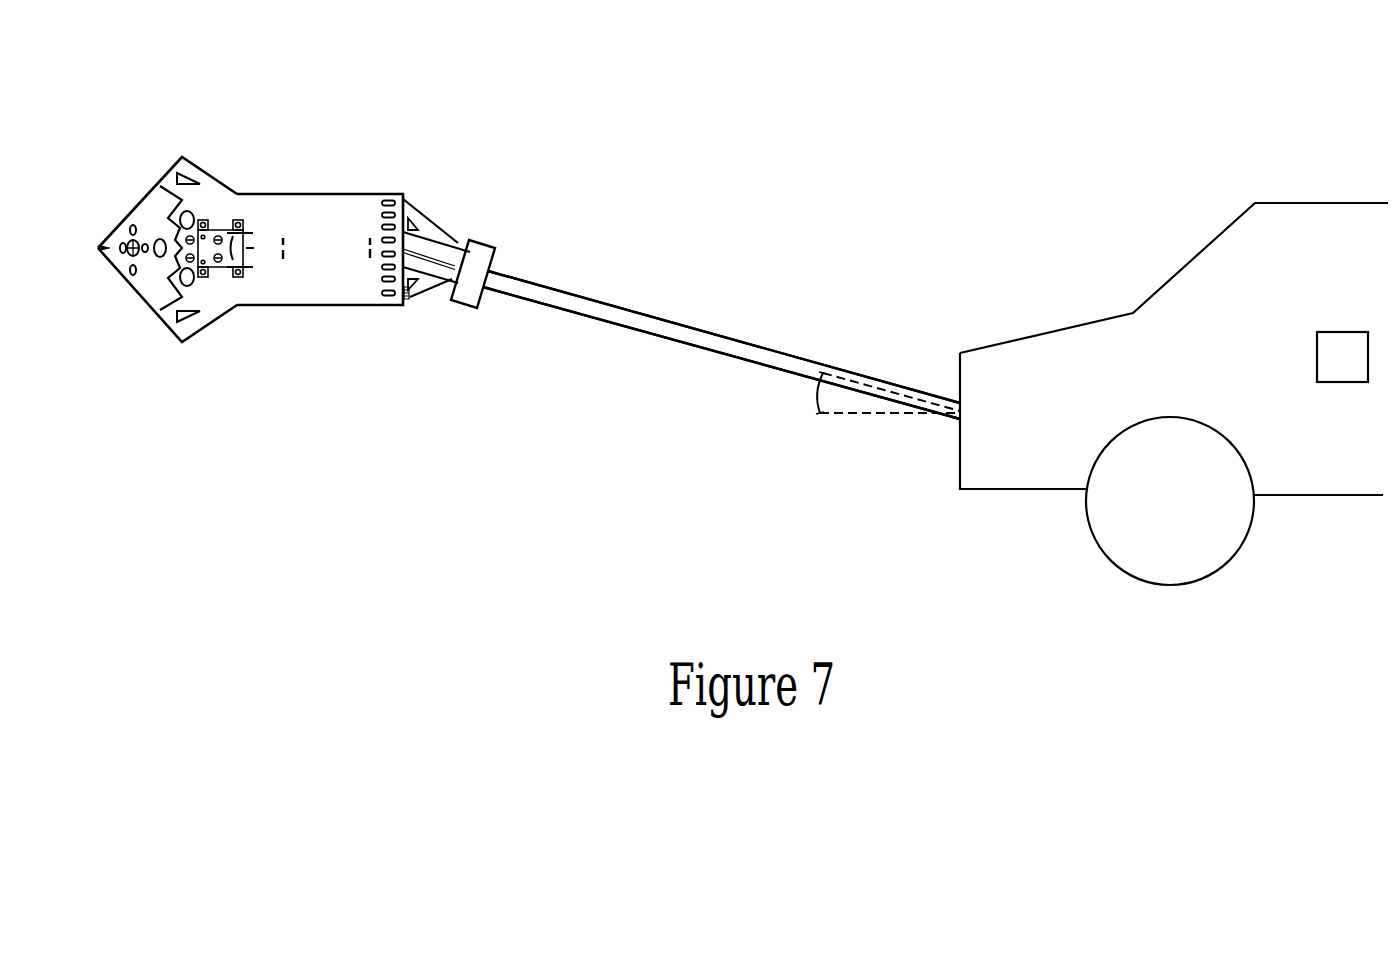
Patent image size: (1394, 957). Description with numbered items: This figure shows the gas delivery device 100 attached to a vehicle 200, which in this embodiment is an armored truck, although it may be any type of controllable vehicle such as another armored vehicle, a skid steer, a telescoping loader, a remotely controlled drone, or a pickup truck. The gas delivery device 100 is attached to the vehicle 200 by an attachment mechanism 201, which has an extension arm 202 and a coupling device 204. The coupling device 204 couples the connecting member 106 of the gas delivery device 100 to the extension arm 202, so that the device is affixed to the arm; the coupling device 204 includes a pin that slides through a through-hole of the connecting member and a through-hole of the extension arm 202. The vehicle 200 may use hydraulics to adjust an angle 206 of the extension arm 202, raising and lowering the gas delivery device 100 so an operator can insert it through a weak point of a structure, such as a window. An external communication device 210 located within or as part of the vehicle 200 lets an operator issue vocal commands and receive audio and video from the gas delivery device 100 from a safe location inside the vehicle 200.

The gas delivery device 100 is at (140, 140).
The connecting member 106 is at (458, 235).
The coupling device 204 is at (481, 240).
The extension arm 202 is at (677, 343).
The attachment mechanism 201 is at (798, 298).
The angle of the extension arm 206 is at (806, 396).
The vehicle 200 is at (1146, 224).
The external communication device 210 is at (1340, 382).